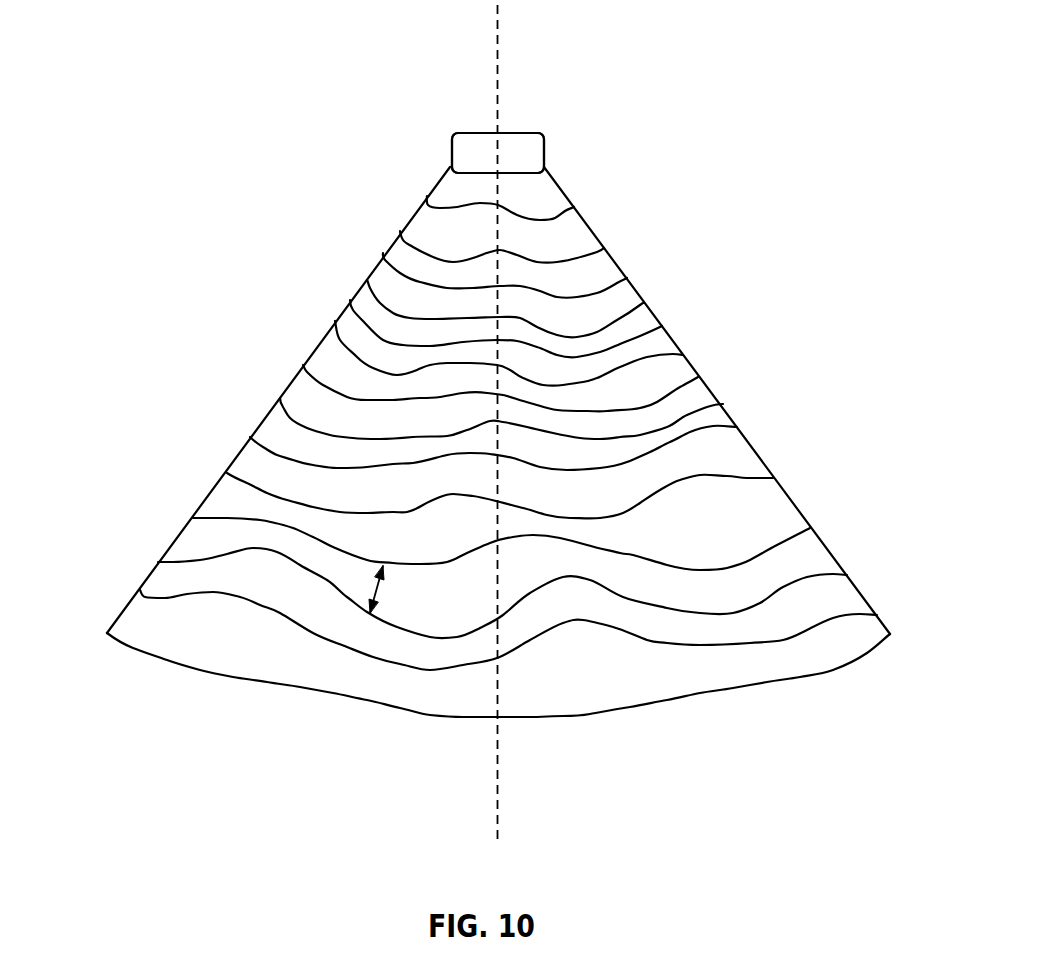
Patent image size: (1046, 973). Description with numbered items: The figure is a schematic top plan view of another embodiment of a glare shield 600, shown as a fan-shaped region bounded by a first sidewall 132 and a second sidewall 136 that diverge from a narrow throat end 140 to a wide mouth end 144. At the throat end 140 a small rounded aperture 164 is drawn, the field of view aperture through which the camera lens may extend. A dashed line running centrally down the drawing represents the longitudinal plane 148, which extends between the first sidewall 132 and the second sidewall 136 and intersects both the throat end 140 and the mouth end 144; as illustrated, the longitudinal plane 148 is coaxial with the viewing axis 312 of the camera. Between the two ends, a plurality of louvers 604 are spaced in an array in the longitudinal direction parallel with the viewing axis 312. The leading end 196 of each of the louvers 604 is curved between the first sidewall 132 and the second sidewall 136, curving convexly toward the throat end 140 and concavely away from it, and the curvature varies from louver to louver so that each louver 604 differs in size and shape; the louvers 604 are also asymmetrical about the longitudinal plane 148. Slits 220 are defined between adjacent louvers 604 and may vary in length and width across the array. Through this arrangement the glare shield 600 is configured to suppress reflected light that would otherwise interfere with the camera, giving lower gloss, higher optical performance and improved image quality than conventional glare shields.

The viewing axis 312 is at (498, 37).
The aperture 164 is at (472, 143).
The throat end 140 is at (545, 148).
The first sidewall 132 is at (375, 276).
The second sidewall 136 is at (717, 392).
The leading end 196 is at (277, 450).
The slits 220 is at (217, 498).
The louvers 604 is at (213, 610).
The mouth end 144 is at (273, 688).
The glare shield 600 is at (498, 464).
The longitudinal plane 148 is at (498, 792).